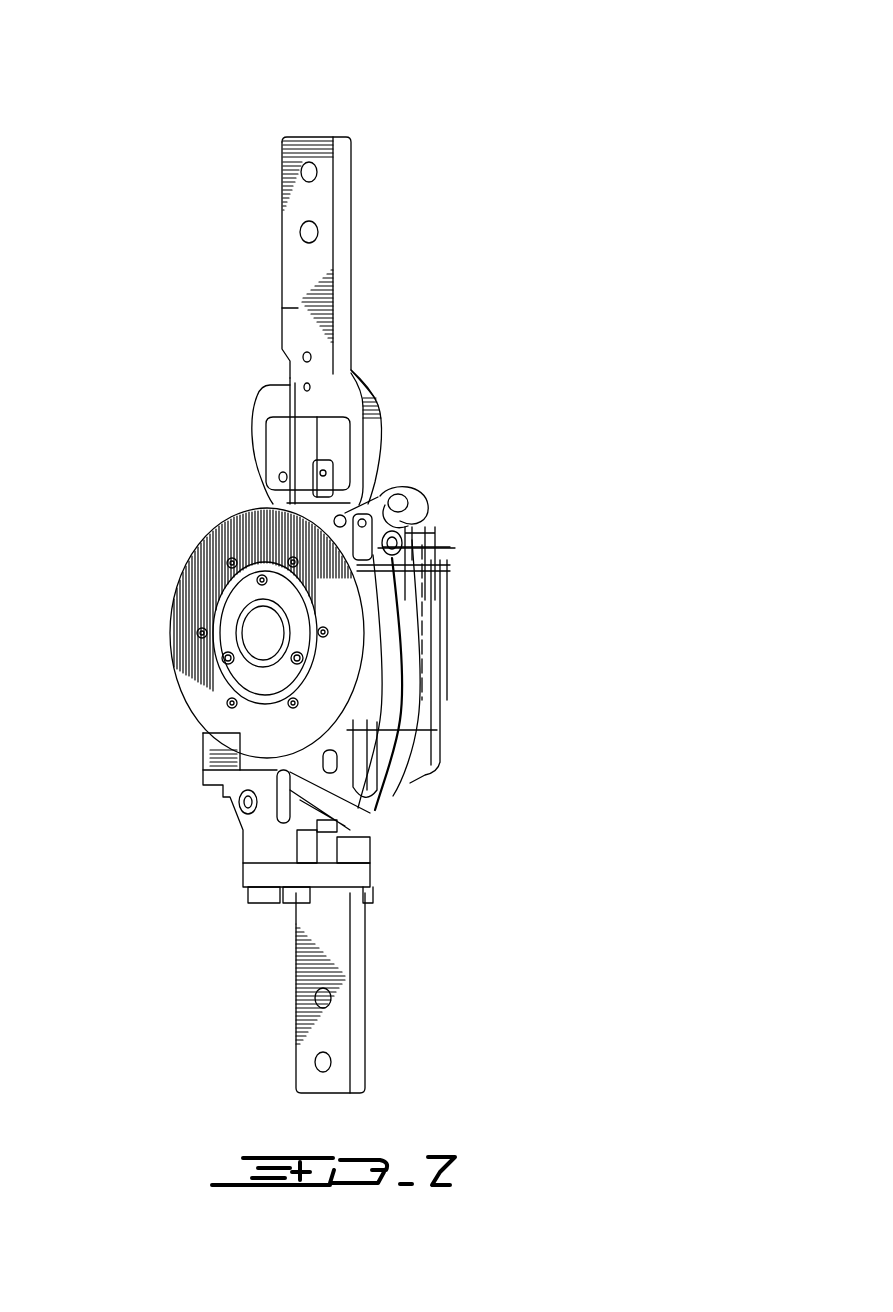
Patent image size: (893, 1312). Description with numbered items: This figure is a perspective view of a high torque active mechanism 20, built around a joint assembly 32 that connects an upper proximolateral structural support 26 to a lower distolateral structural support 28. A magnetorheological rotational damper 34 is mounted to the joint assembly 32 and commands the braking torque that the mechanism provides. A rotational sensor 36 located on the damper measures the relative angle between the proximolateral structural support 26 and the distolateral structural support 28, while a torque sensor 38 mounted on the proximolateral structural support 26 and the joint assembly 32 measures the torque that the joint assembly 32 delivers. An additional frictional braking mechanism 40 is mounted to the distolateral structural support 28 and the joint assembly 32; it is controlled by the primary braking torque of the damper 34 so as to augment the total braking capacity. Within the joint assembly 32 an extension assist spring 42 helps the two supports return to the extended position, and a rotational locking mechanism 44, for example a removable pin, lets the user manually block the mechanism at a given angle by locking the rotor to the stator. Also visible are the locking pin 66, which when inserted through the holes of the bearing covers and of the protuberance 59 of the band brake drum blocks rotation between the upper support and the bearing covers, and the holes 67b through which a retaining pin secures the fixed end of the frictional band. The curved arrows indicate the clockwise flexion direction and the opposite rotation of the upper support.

The brake assembly 20 is at (526, 617).
The proximolateral structural support 26 is at (343, 227).
The distolateral structural support 28 is at (356, 1012).
The joint assembly 32 is at (181, 576).
The magnetorheological rotational damper 34 is at (393, 638).
The rotational sensor 36 is at (258, 637).
The torque sensor 38 is at (237, 382).
The braking mechanism 40 is at (186, 770).
The extension assist spring 42 is at (417, 714).
The rotational locking mechanism 44 is at (365, 513).
The protuberance 59 is at (413, 491).
The locking pin 66 is at (384, 490).
The holes 67b is at (387, 569).